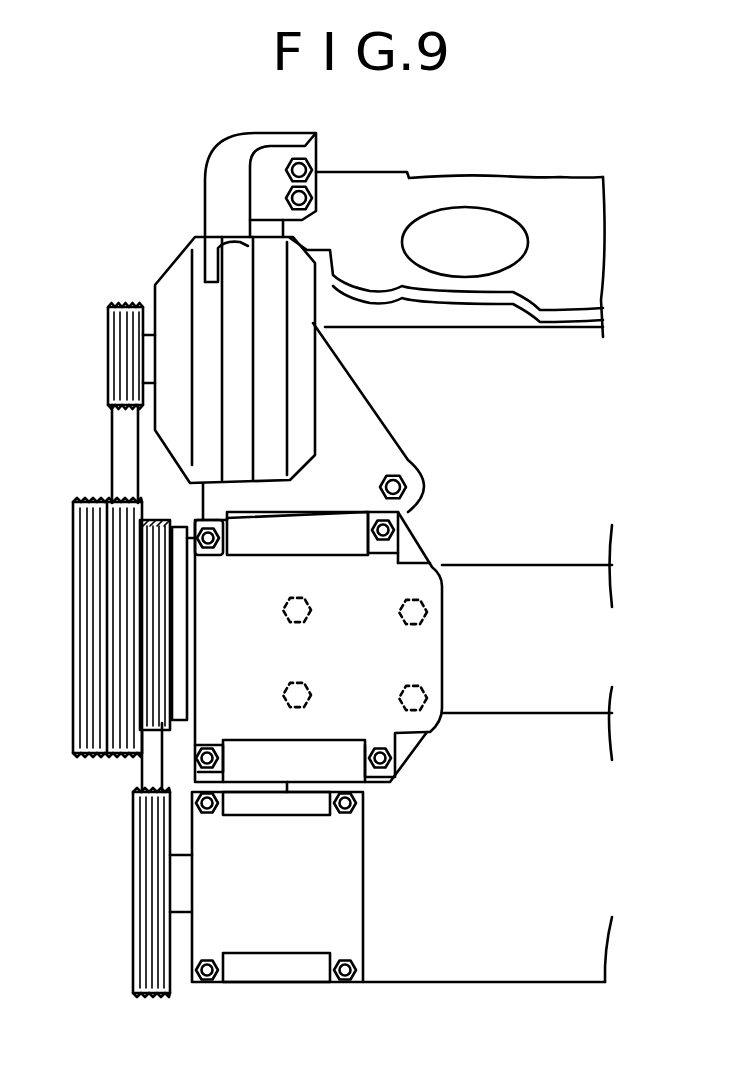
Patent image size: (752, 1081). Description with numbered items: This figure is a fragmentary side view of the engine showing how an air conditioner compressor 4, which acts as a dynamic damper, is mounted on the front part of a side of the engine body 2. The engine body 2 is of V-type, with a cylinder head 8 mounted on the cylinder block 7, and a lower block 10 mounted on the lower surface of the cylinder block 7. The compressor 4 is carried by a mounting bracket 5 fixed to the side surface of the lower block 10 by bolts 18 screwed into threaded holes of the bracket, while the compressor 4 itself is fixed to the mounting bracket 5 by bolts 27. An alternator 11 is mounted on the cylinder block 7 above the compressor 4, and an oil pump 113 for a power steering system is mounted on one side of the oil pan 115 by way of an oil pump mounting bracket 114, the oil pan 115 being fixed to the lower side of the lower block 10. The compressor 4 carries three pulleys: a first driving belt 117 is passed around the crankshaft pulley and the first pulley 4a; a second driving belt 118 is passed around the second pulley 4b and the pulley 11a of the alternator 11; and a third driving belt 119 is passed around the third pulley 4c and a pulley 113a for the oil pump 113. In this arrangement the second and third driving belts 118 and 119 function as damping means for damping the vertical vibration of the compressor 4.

The engine body 2 is at (392, 166).
The air conditioner compressor 4 is at (448, 650).
The first pulley 4a is at (88, 568).
The second pulley 4b is at (123, 615).
The third pulley 4c is at (145, 670).
The mounting bracket 5 is at (407, 743).
The cylinder block 7 is at (560, 483).
The cylinder head 8 is at (563, 207).
The lower block 10 is at (566, 700).
The alternator 11 is at (172, 288).
The pulley of the alternator 11a is at (120, 352).
The bolts 18 is at (295, 683).
The bolts 27 is at (377, 530).
The oil pump 113 is at (337, 873).
The pulley for the oil pump 113a is at (148, 913).
The oil pump mounting bracket 114 is at (280, 975).
The oil pan 115 is at (538, 968).
The first driving belt 117 is at (96, 500).
The second driving belt 118 is at (112, 305).
The third driving belt 119 is at (148, 768).